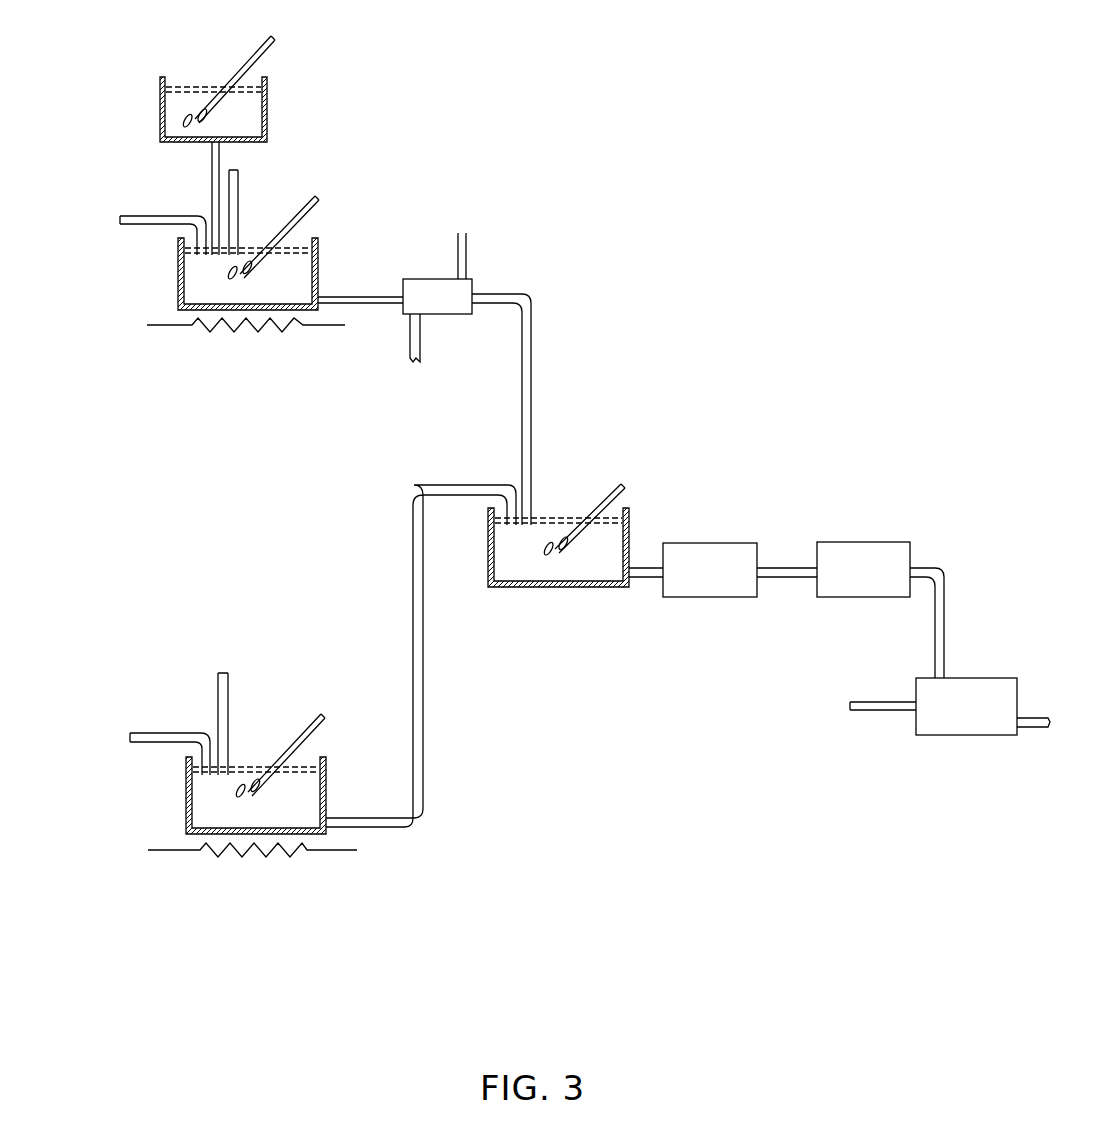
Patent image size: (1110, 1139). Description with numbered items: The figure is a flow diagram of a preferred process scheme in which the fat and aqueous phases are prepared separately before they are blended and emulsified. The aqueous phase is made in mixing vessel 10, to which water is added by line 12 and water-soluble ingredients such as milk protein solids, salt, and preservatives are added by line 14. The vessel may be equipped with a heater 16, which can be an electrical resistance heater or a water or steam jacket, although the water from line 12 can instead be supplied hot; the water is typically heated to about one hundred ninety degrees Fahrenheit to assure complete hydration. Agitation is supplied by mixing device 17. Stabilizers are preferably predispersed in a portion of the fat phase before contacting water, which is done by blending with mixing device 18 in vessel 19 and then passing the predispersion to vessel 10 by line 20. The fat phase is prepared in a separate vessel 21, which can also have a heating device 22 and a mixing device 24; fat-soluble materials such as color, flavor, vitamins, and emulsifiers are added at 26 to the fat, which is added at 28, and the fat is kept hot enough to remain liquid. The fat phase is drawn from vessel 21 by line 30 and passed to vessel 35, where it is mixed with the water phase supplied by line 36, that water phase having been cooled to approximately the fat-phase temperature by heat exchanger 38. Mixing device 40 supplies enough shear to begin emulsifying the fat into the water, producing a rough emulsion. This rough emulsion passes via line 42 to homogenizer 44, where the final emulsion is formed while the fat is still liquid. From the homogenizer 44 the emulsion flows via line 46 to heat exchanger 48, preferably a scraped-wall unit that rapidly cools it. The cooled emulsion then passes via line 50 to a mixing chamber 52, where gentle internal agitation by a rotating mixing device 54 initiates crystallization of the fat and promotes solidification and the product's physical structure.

The mixing vessel 10 is at (319, 260).
The line 12 is at (152, 208).
The line 14 is at (240, 182).
The heater 16 is at (240, 333).
The mixing device 17 is at (320, 202).
The mixing device 18 is at (262, 44).
The vessel 19 is at (268, 98).
The line 20 is at (211, 166).
The vessel 21 is at (328, 784).
The heating device 22 is at (248, 858).
The mixing device 24 is at (300, 726).
The addition point 26 is at (228, 690).
The addition point 28 is at (155, 731).
The line 30 is at (412, 831).
The vessel 35 is at (557, 588).
The line 36 is at (532, 366).
The heat exchanger 38 is at (424, 278).
The mixing device 40 is at (620, 478).
The line 42 is at (648, 580).
The homogenizer 44 is at (741, 538).
The line 46 is at (805, 580).
The heat exchanger 48 is at (879, 536).
The line 50 is at (948, 591).
The mixing chamber 52 is at (965, 737).
The rotating mixing device 54 is at (892, 712).